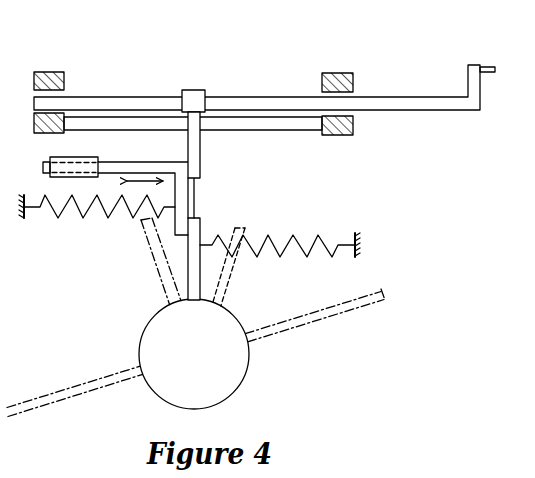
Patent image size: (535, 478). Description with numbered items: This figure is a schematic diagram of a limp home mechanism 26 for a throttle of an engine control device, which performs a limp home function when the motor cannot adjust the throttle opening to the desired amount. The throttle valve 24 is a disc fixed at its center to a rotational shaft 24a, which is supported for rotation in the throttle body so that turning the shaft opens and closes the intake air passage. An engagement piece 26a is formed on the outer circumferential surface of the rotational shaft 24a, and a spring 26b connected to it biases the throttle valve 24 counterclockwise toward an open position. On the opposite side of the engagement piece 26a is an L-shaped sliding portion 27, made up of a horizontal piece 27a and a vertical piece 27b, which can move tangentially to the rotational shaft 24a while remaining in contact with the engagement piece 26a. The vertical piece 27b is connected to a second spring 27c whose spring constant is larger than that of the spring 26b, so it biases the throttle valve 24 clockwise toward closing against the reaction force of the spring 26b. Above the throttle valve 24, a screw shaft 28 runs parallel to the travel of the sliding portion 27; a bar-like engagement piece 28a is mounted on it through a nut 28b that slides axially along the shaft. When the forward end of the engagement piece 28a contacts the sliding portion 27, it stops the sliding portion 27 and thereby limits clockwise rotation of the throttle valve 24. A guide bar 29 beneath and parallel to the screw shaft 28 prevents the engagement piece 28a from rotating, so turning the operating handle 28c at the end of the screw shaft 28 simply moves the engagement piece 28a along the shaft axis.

The throttle valve 24 is at (350, 310).
The rotational shaft 24a is at (238, 387).
The limp home mechanism 26 is at (337, 217).
The engagement piece 26a is at (193, 273).
The spring 26b is at (280, 257).
The sliding portion 27 is at (108, 160).
The horizontal piece 27a is at (112, 162).
The vertical piece 27b is at (194, 202).
The spring 27c is at (57, 216).
The screw shaft 28 is at (245, 97).
The engagement piece 28a is at (200, 172).
The nut 28b is at (193, 90).
The operating handle 28c is at (486, 65).
The guide bar 29 is at (286, 128).